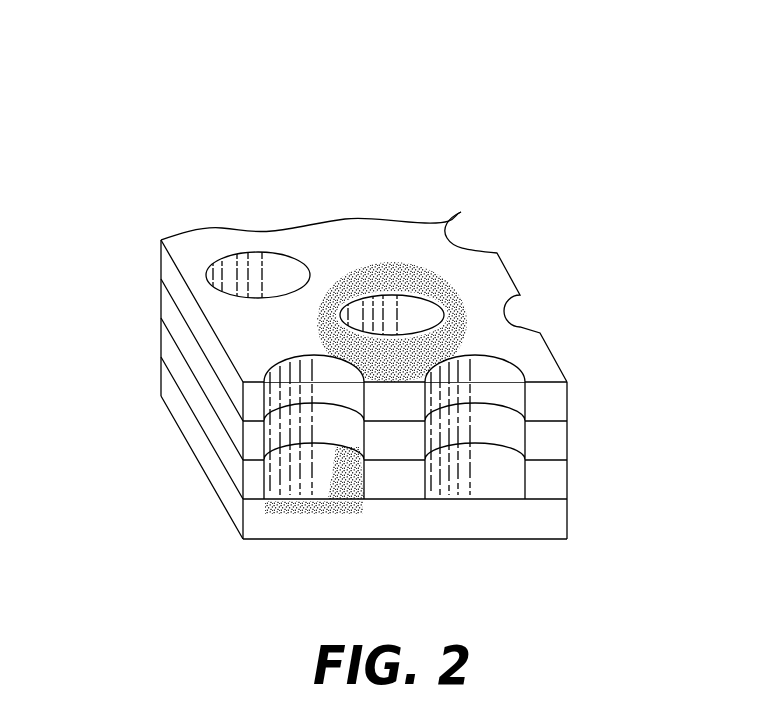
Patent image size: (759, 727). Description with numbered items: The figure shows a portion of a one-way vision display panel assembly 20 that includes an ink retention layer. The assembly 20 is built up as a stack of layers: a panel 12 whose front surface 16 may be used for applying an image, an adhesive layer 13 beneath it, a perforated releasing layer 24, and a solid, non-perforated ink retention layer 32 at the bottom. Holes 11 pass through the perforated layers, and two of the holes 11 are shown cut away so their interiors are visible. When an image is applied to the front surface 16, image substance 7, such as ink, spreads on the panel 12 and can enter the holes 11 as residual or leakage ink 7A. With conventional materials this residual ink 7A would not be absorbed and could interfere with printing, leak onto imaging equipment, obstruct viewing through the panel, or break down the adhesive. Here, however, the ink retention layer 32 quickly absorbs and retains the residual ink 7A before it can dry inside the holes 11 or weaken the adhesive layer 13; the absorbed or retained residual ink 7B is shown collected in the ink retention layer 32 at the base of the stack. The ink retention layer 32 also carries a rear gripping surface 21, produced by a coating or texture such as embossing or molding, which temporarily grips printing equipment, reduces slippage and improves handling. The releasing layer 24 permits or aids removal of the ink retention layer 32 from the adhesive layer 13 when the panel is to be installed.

The one-way vision display panel assembly 20 is at (575, 162).
The holes 11 is at (283, 260).
The panel 12 is at (167, 263).
The adhesive layer 13 is at (167, 308).
The perforated releasing layer 24 is at (167, 347).
The ink retention layer 32 is at (167, 392).
The rear gripping surface 21 is at (250, 544).
The front surface 16 is at (495, 277).
The image substance 7 is at (478, 340).
The residual ink 7A is at (328, 484).
The absorbed or retained residual ink 7B is at (345, 507).